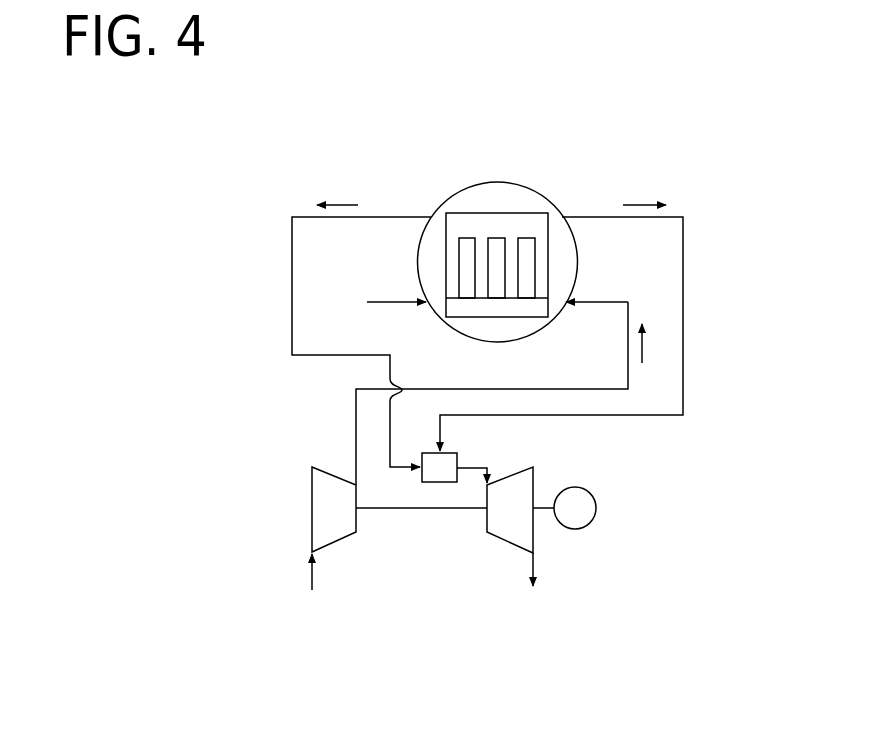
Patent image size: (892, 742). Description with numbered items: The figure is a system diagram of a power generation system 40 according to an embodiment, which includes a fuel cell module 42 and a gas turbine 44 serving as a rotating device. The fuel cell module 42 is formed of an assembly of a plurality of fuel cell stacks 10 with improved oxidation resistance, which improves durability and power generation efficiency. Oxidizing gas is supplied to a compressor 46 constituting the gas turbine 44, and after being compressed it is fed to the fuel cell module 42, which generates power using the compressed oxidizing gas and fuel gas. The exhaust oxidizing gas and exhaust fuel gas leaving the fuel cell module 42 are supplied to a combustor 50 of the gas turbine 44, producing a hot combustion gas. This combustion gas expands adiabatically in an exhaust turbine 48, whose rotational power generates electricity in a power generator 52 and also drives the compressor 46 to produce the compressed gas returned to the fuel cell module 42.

The power generation system 40 is at (494, 111).
The fuel cell module 42 is at (513, 184).
The fuel cell stack 10 is at (527, 237).
The gas turbine 44 is at (316, 448).
The compressor 46 is at (312, 500).
The exhaust turbine 48 is at (513, 547).
The combustor 50 is at (458, 462).
The power generator 52 is at (595, 500).